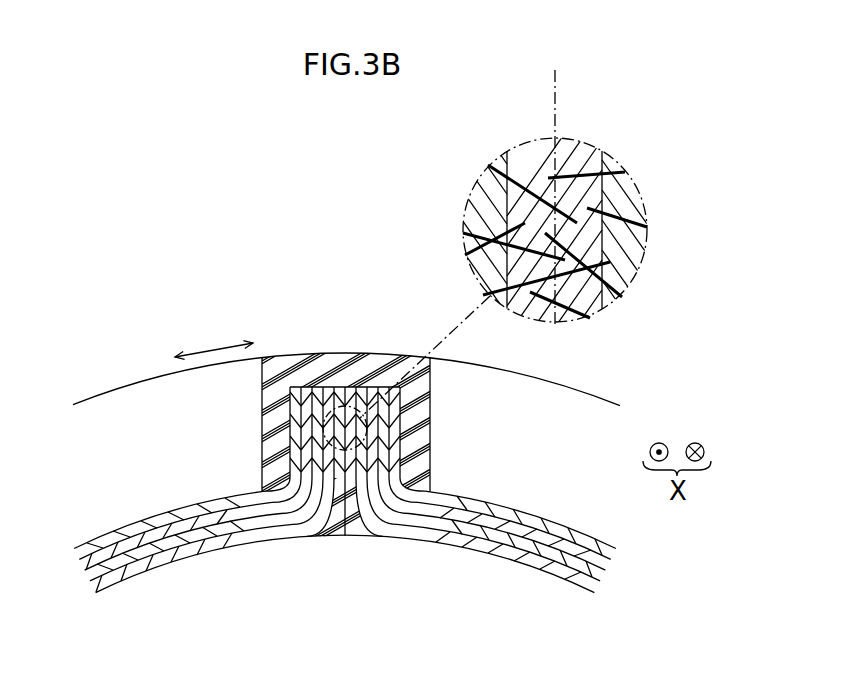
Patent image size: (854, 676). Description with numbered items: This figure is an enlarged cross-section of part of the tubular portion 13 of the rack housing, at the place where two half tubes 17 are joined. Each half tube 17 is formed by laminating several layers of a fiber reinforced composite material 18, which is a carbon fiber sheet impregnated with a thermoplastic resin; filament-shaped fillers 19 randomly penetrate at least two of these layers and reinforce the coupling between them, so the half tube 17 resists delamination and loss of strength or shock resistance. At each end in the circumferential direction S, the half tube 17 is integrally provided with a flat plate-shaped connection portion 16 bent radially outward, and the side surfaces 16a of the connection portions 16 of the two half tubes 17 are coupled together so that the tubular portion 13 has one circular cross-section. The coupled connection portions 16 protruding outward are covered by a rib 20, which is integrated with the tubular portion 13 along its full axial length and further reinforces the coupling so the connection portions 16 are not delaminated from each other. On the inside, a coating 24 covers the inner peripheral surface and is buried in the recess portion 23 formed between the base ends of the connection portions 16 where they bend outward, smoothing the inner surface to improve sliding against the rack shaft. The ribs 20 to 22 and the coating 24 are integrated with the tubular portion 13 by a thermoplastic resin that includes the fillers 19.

The tubular portion 13 is at (142, 218).
The connection portion 16 is at (287, 428).
The side surface 16a is at (345, 406).
The half tube 17 is at (224, 557).
The fiber reinforced composite material 18 is at (110, 537).
The filler 19 is at (528, 177).
The rib 20 is at (312, 373).
The rib 22 is at (138, 400).
The recess portion 23 is at (359, 528).
The coating 24 is at (342, 538).
The circumferential direction S is at (218, 348).